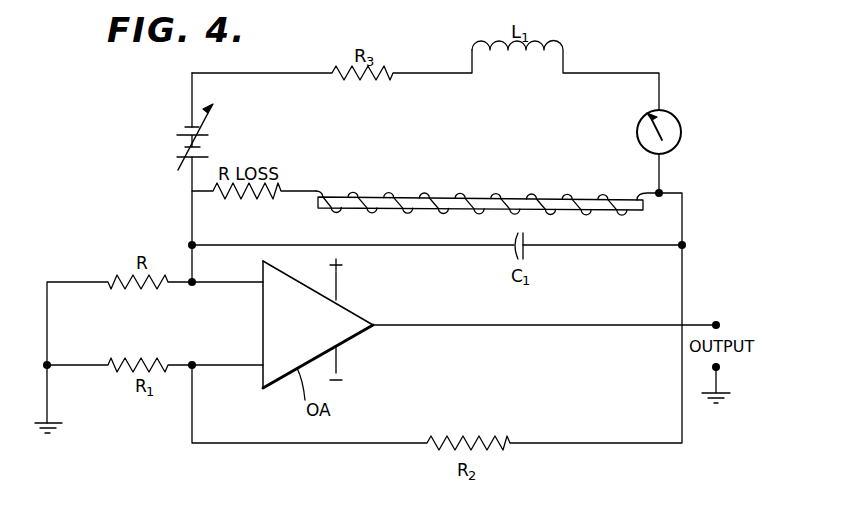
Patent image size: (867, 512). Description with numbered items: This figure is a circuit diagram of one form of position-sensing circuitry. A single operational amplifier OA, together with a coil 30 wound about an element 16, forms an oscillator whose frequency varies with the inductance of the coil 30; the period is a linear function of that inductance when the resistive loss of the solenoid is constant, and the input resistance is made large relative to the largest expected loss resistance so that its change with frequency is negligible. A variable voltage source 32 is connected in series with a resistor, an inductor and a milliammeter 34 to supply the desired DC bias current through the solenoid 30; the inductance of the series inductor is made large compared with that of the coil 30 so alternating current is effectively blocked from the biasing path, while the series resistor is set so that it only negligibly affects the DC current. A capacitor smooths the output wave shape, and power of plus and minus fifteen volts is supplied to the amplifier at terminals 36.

The element 16 is at (636, 208).
The coil 30 is at (425, 195).
The variable voltage source 32 is at (212, 142).
The milliammeter 34 is at (681, 127).
The terminals 36 is at (341, 273).